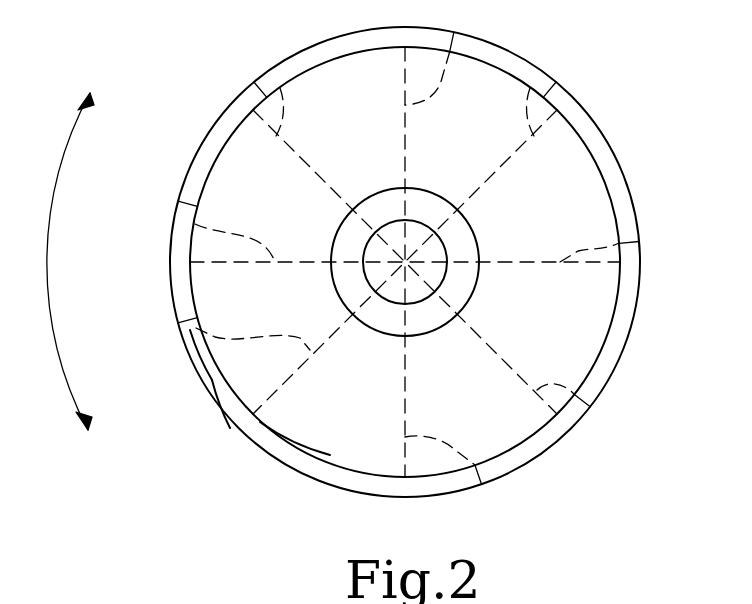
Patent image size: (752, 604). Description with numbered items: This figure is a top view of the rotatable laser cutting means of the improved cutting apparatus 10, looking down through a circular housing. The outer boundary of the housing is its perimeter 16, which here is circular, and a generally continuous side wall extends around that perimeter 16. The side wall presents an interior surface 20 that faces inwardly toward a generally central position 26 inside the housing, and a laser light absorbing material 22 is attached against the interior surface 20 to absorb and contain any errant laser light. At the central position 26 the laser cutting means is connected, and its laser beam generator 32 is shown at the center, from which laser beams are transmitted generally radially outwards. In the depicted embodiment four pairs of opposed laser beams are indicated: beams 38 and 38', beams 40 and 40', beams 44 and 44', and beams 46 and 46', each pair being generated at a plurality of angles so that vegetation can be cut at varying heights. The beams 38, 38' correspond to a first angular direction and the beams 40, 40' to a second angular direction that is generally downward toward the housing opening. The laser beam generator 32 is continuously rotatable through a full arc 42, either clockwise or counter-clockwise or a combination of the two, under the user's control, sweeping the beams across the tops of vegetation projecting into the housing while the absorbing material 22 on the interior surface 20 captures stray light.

The cutting apparatus 10 is at (660, 118).
The perimeter 16 is at (228, 423).
The interior surface 20 is at (213, 382).
The laser light absorbing material 22 is at (321, 450).
The central position 26 is at (405, 262).
The laser beam generator 32 is at (447, 277).
The first angular direction 38 is at (463, 52).
The second angular direction 40 is at (552, 82).
The opposed laser beam 44 is at (622, 243).
The opposed laser beam 46 is at (601, 397).
The first angular direction 38' is at (492, 467).
The second angular direction 40' is at (218, 320).
The opposed laser beam 44' is at (205, 218).
The opposed laser beam 46' is at (257, 78).
The arc 42 is at (55, 261).